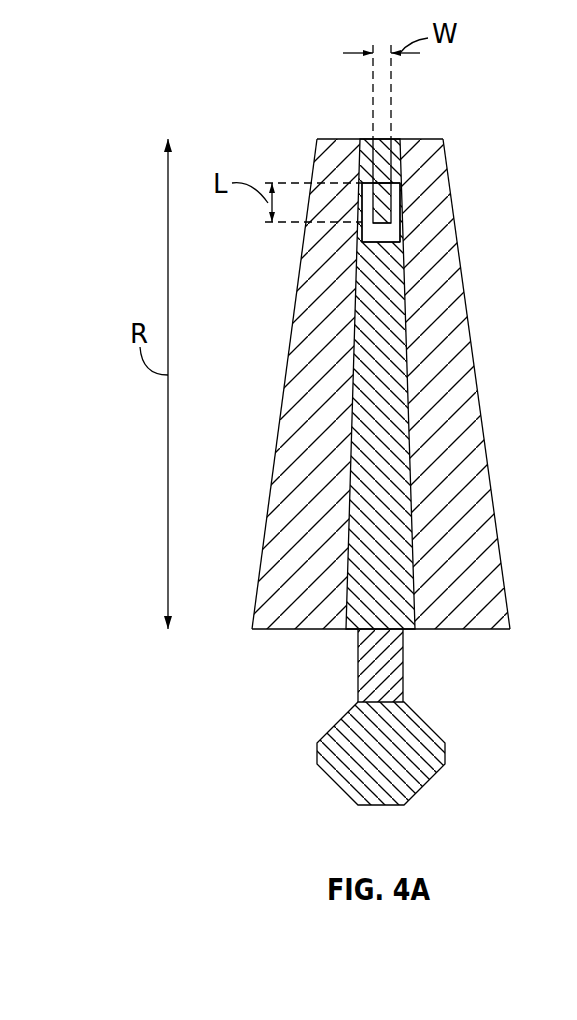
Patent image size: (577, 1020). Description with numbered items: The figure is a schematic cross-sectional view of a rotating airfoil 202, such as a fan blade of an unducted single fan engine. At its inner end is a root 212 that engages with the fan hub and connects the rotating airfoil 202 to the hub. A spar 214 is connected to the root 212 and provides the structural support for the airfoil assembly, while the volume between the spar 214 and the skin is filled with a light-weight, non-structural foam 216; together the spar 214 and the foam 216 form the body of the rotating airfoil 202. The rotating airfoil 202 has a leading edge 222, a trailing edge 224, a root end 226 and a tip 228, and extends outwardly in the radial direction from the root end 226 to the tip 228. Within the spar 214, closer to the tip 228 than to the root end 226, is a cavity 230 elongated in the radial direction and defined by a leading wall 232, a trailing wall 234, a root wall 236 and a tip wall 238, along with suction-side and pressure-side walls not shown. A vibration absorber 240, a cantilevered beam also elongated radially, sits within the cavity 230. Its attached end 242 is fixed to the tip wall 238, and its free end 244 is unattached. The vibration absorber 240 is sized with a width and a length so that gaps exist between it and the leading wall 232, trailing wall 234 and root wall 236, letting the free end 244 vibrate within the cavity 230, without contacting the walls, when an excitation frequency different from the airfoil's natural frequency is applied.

The rotating airfoil 202 is at (373, 434).
The root 212 is at (404, 733).
The spar 214 is at (383, 440).
The foam 216 is at (460, 417).
The leading edge 222 is at (277, 418).
The trailing edge 224 is at (482, 372).
The root end 226 is at (264, 638).
The tip 228 is at (428, 134).
The cavity 230 is at (377, 232).
The leading wall 232 is at (358, 188).
The trailing wall 234 is at (392, 190).
The root wall 236 is at (398, 246).
The tip wall 238 is at (373, 178).
The vibration absorber 240 is at (392, 198).
The attached end 242 is at (401, 183).
The free end 244 is at (392, 212).